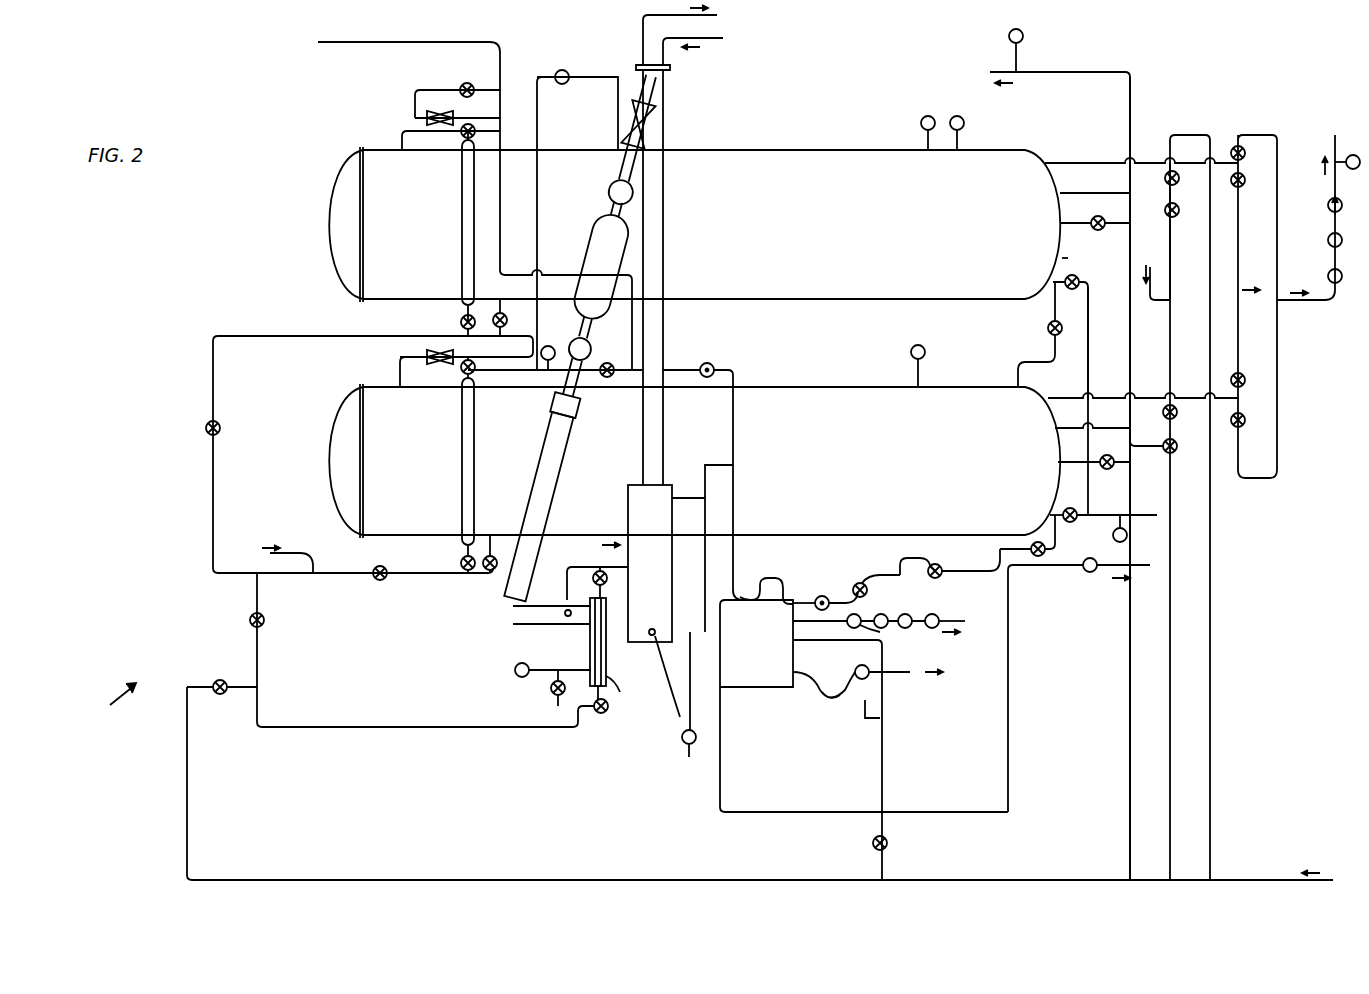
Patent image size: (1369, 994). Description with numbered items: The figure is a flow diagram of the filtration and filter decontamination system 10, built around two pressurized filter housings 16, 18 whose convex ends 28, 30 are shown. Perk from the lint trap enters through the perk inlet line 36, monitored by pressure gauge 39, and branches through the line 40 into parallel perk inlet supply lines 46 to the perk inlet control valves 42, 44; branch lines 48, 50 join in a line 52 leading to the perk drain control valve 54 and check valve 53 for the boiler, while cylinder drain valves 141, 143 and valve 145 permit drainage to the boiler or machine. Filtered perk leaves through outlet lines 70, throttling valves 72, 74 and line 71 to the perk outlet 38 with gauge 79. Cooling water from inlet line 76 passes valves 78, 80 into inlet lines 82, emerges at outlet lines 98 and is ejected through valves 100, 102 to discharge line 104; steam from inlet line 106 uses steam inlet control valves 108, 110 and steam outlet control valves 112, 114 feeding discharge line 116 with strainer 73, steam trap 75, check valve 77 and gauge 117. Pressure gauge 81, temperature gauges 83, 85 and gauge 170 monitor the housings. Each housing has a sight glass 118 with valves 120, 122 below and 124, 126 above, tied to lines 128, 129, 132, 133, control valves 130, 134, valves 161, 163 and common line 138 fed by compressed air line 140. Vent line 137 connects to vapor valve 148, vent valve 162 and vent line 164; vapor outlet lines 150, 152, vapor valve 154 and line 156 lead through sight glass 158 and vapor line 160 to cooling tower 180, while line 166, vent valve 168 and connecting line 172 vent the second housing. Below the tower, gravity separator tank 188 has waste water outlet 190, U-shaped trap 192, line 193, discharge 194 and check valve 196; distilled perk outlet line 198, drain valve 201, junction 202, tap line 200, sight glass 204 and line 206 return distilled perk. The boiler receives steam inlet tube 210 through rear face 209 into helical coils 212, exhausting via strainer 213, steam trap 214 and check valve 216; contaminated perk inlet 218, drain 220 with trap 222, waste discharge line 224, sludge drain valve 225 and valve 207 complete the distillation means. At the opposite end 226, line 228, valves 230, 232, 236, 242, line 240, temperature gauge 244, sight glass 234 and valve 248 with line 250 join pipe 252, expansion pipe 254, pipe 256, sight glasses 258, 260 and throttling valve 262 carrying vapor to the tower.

The filtration and filter decontamination system 10 is at (104, 703).
The filter housing 16 is at (718, 150).
The filter housing 18 is at (798, 387).
The convex outer end 28 is at (335, 195).
The convex outer end 30 is at (1092, 336).
The perk inlet line 36 is at (1150, 520).
The perk outlet 38 is at (1000, 72).
The pressure gauge 39 is at (1113, 538).
The line 40 is at (1083, 515).
The perk inlet control valve 42 is at (1077, 343).
The perk inlet control valve 44 is at (1047, 545).
The perk inlet supply line 46 is at (1060, 512).
The branch line 48 is at (1025, 362).
The branch line 50 is at (952, 557).
The line 52 is at (912, 550).
The check valve 53 is at (852, 598).
The perk drain control valve 54 is at (876, 582).
The filtered perk outlet line 70 is at (1070, 462).
The line 71 is at (1133, 105).
The adjustable throttling valve 72 is at (1092, 222).
The strainer 73 is at (1328, 275).
The adjustable throttling valve 74 is at (1114, 463).
The steam trap 75 is at (1328, 240).
The cooling water inlet line 76 is at (700, 38).
The check valve 77 is at (1328, 207).
The valve 78 is at (1159, 521).
The pressure gauge 79 is at (1024, 38).
The valve 80 is at (1157, 413).
The pressure gauge 81 is at (925, 116).
The inlet line 82 is at (1105, 193).
The temperature gauge 83 is at (960, 116).
The temperature gauge 85 is at (913, 358).
The outlet line 98 is at (1146, 158).
The valve 100 is at (1244, 184).
The valve 102 is at (1245, 377).
The cooling water discharge line 104 is at (705, 15).
The steam inlet line 106 is at (1283, 882).
The steam inlet control valve 108 is at (1156, 176).
The steam inlet control valve 110 is at (1118, 460).
The steam outlet control valve 112 is at (1233, 145).
The steam outlet control valve 114 is at (1245, 424).
The steam discharge line 116 is at (1300, 302).
The pressure gauge 117 is at (1350, 155).
The sight glass 118 is at (462, 193).
The throttling valve 120 is at (460, 325).
The throttling valve 122 is at (460, 562).
The valve 124 is at (461, 136).
The valve 126 is at (461, 372).
The line 128 is at (322, 322).
The line 129 is at (470, 345).
The control valve 130 is at (220, 428).
The line 132 is at (425, 580).
The line 133 is at (488, 575).
The valve 134 is at (385, 582).
The vent line 137 is at (395, 137).
The common line 138 is at (213, 538).
The line 140 is at (320, 565).
The cylinder drain valve 141 is at (1048, 332).
The cylinder drain valve 143 is at (958, 556).
The valve 145 is at (945, 573).
The vapor valve 148 is at (450, 111).
The vapor outlet line 150 is at (512, 118).
The vapor outlet line 152 is at (540, 222).
The vapor valve 154 is at (425, 352).
The line 156 is at (400, 378).
The sight glass 158 is at (565, 85).
The vapor line 160 is at (612, 77).
The valve 161 is at (508, 325).
The vent valve 162 is at (465, 84).
The valve 163 is at (493, 585).
The vent line 164 is at (400, 42).
The line 166 is at (540, 372).
The vent valve 168 is at (613, 377).
The pressure gauge 170 is at (560, 340).
The connecting line 172 is at (565, 275).
The cooling tower 180 is at (667, 357).
The gravity separator tank 188 is at (593, 569).
The contaminated waste water outlet 190 is at (690, 490).
The U-shaped trap 192 is at (745, 588).
The line 193 is at (735, 485).
The waste water discharge 194 is at (778, 580).
The check valve 196 is at (712, 362).
The distilled perk outlet line 198 is at (661, 680).
The distilled perk tap line 200 is at (720, 758).
The valve 201 is at (686, 745).
The junction 202 is at (705, 575).
The sight glass 204 is at (1085, 572).
The line 206 is at (1105, 578).
The valve 207 is at (887, 845).
The rear circular face 209 is at (798, 680).
The steam inlet tube 210 is at (803, 640).
The helical coils 212 is at (840, 620).
The strainer 213 is at (889, 638).
The steam trap 214 is at (912, 608).
The check valve 216 is at (972, 620).
The contaminated perk inlet 218 is at (824, 595).
The drain 220 is at (818, 698).
The U-shaped trap 222 is at (857, 666).
The waste discharge line 224 is at (896, 675).
The sludge drain valve 225 is at (859, 703).
The opposite end 226 is at (560, 642).
The line 228 is at (580, 668).
The valve 230 is at (552, 690).
The valve 232 is at (610, 708).
The sight glass 234 is at (636, 691).
The valve 236 is at (235, 680).
The line 240 is at (257, 680).
The valve 242 is at (272, 605).
The temperature gauge 244 is at (520, 678).
The valve 248 is at (625, 556).
The line 250 is at (572, 593).
The pipe 252 is at (580, 630).
The expansion pipe 254 is at (545, 482).
The pipe 256 is at (562, 397).
The sight glass 258 is at (586, 352).
The sight glass 260 is at (608, 192).
The throttling valve 262 is at (630, 120).